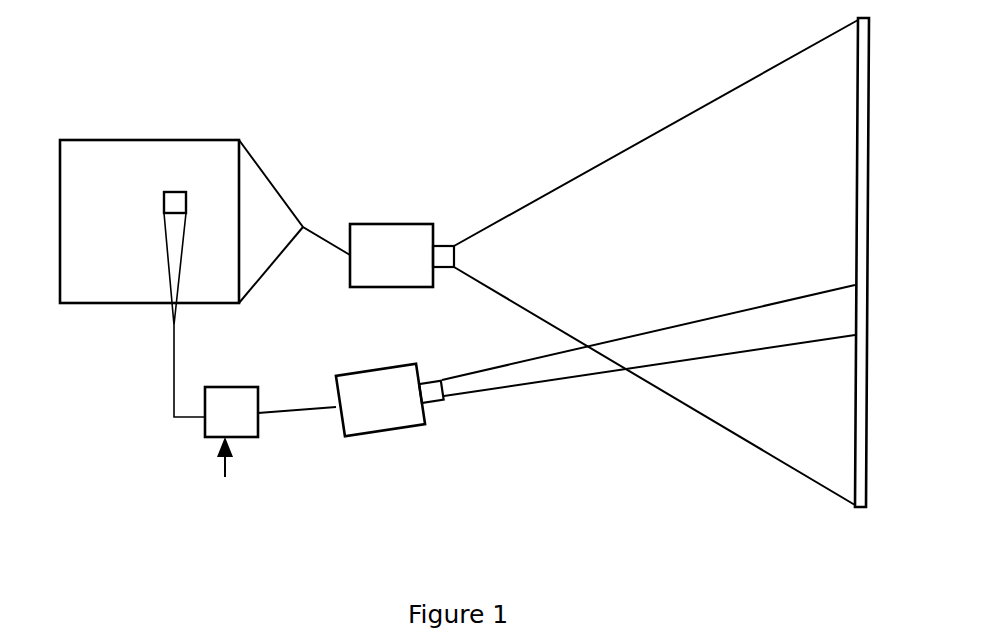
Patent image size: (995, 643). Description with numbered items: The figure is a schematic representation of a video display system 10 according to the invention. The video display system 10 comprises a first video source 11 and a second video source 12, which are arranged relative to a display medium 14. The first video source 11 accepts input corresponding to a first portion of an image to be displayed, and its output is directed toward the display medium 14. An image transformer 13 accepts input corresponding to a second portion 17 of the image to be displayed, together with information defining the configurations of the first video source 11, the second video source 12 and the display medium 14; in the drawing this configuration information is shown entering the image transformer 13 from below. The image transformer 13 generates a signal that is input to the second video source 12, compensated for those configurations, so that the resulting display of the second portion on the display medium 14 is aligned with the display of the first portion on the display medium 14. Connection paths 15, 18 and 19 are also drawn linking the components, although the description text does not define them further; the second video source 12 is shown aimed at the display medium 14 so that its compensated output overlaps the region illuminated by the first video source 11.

The video display system 10 is at (683, 536).
The first video source 11 is at (604, 262).
The second video source 12 is at (345, 288).
The image transformer 13 is at (184, 414).
The display medium 14 is at (655, 262).
The configuration input 15 is at (335, 534).
The second portion 17 is at (193, 167).
The connection line 18 is at (343, 458).
The video signal connection 19 is at (328, 221).